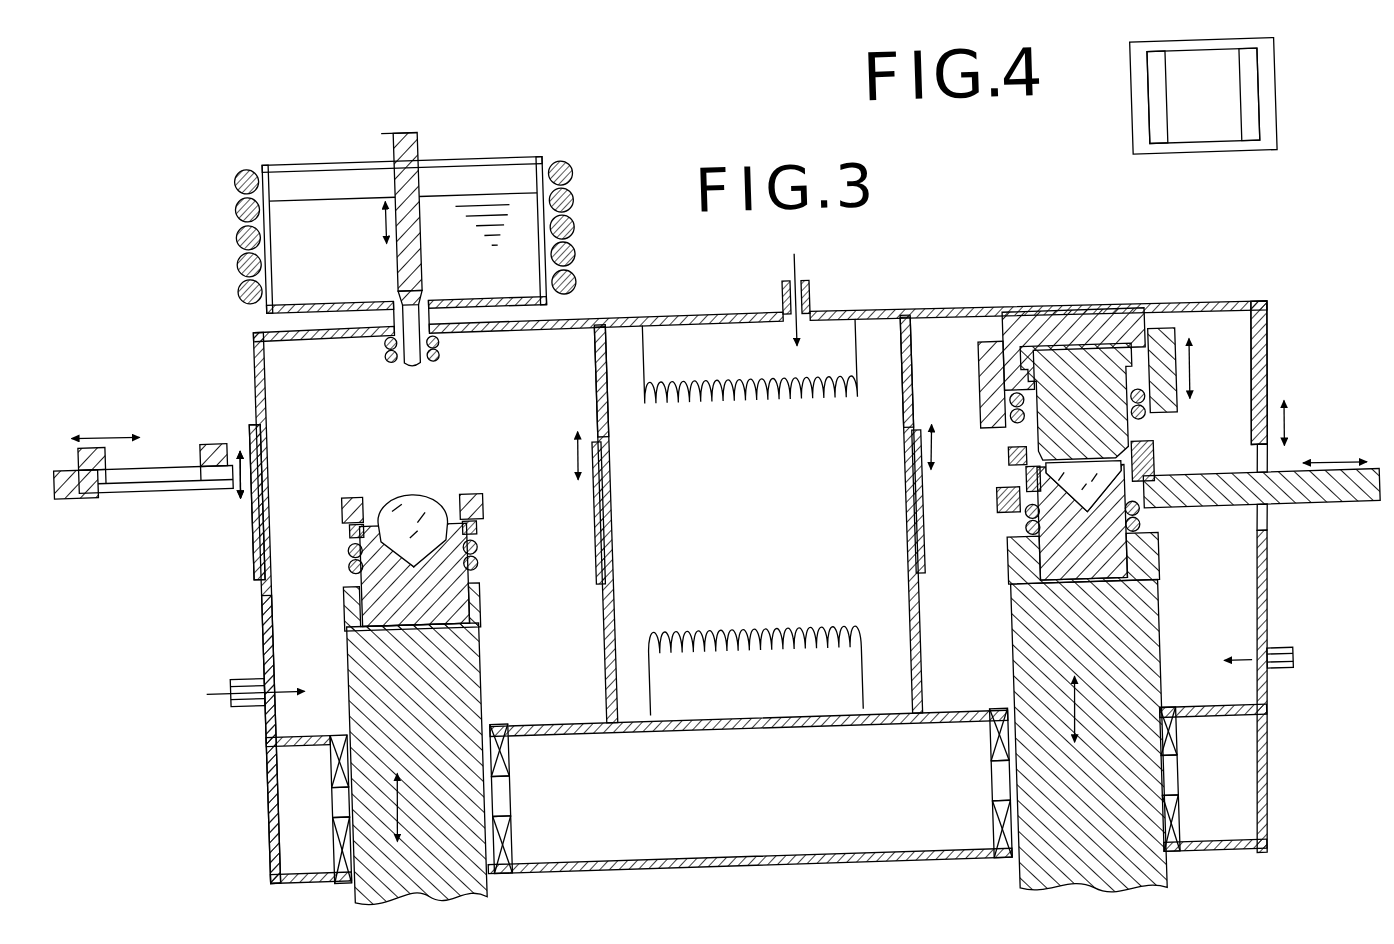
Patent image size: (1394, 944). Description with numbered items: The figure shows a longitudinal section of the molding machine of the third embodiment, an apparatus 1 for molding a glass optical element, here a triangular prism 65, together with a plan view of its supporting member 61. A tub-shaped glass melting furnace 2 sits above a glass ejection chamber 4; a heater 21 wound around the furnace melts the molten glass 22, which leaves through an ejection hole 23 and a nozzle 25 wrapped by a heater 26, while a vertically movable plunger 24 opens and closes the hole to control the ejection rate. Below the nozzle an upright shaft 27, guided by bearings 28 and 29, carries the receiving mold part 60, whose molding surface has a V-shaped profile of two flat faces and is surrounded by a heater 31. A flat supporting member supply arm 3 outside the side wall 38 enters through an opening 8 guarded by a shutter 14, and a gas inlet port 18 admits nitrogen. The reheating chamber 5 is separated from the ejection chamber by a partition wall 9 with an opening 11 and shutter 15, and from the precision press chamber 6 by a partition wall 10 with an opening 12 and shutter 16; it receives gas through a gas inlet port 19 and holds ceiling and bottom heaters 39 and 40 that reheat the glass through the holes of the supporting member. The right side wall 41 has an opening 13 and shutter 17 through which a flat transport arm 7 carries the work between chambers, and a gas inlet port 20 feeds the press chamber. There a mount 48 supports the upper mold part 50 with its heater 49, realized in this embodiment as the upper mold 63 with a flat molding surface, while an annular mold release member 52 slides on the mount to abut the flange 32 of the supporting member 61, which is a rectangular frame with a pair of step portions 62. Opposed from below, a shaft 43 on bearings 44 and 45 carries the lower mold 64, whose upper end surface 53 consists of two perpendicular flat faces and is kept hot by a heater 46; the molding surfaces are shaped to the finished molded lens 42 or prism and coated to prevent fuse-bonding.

In FIG. 3, the apparatus 1 is at (1190, 231).
In FIG. 3, the glass melting furnace 2 is at (587, 134).
In FIG. 3, the supporting member supply arm 3 is at (76, 468).
In FIG. 3, the glass ejection chamber 4 is at (305, 374).
In FIG. 3, the reheating chamber 5 is at (879, 384).
In FIG. 3, the precision press chamber 6 is at (1226, 362).
In FIG. 3, the transport arm 7 is at (1343, 523).
In FIG. 3, the opening 8 is at (255, 424).
In FIG. 3, the partition wall 9 is at (615, 318).
In FIG. 3, the partition wall 10 is at (922, 333).
In FIG. 3, the opening 11 is at (618, 505).
In FIG. 3, the opening 12 is at (903, 494).
In FIG. 3, the opening 13 is at (1268, 536).
In FIG. 3, the shutter 14 is at (255, 514).
In FIG. 3, the shutter 15 is at (603, 440).
In FIG. 3, the shutter 16 is at (921, 555).
In FIG. 3, the shutter 17 is at (1277, 386).
In FIG. 3, the gas inlet port 18 is at (236, 659).
In FIG. 3, the gas inlet port 19 is at (822, 294).
In FIG. 3, the gas inlet port 20 is at (1288, 667).
In FIG. 3, the heater 21 is at (246, 249).
In FIG. 3, the molten glass 22 is at (369, 203).
In FIG. 3, the ejection hole 23 is at (433, 284).
In FIG. 3, the plunger 24 is at (433, 170).
In FIG. 3, the nozzle 25 is at (403, 351).
In FIG. 3, the heater 26 is at (448, 343).
In FIG. 3, the shaft 27 is at (453, 655).
In FIG. 3, the bearing 28 is at (505, 769).
In FIG. 3, the bearing 29 is at (498, 822).
In FIG. 3, the heater 31 is at (479, 561).
In FIG. 3, the flange 32 is at (493, 497).
In FIG. 3, the side wall 38 is at (260, 594).
In FIG. 3, the heater 39 is at (786, 401).
In FIG. 3, the heater 40 is at (779, 641).
In FIG. 3, the right side wall 41 is at (1268, 606).
In FIG. 3, the molded lens 42 is at (1169, 473).
In FIG. 3, the shaft 43 is at (1130, 620).
In FIG. 3, the bearing 44 is at (990, 764).
In FIG. 3, the bearing 45 is at (988, 832).
In FIG. 3, the heater 46 is at (1142, 530).
In FIG. 3, the mount 48 is at (1107, 331).
In FIG. 3, the heater 49 is at (1000, 454).
In FIG. 3, the upper mold part 50 is at (998, 352).
In FIG. 3, the mold release member 52 is at (1171, 345).
In FIG. 3, the upper end surface 53 is at (994, 484).
In FIG. 3, the receiving mold part 60 is at (445, 590).
In FIG. 3, the supporting member 61 is at (480, 526).
In FIG. 3, the step portions 62 is at (209, 453).
In FIG. 4, the step portions 62 is at (1171, 88).
In FIG. 3, the upper mold 63 is at (1067, 370).
In FIG. 3, the lower mold 64 is at (1041, 577).
In FIG. 3, the triangular prism 65 is at (1133, 447).